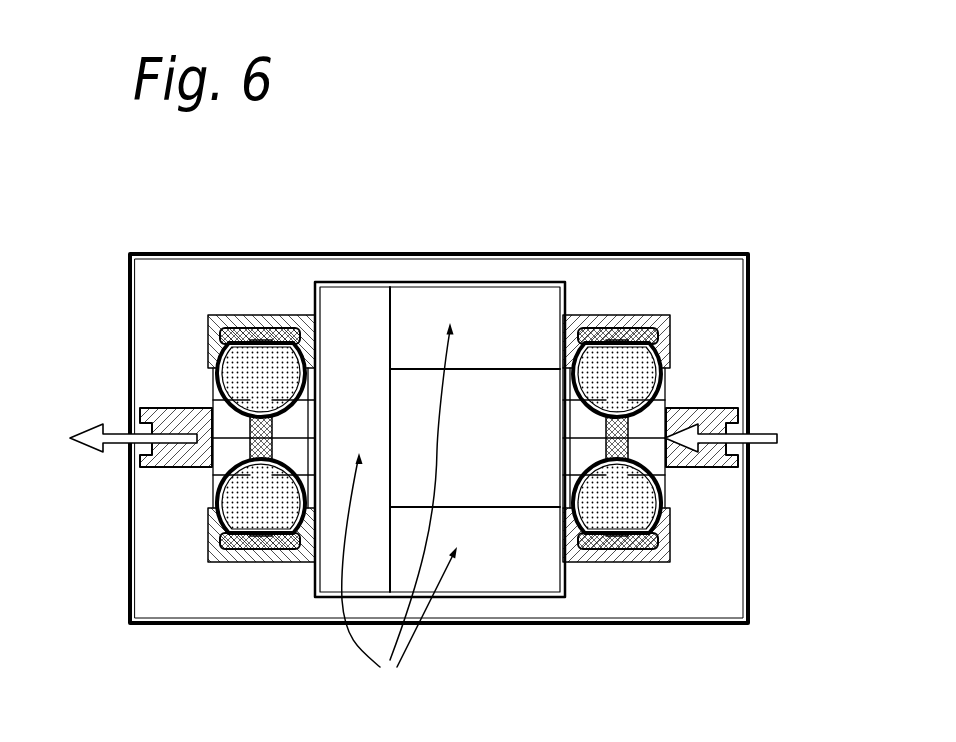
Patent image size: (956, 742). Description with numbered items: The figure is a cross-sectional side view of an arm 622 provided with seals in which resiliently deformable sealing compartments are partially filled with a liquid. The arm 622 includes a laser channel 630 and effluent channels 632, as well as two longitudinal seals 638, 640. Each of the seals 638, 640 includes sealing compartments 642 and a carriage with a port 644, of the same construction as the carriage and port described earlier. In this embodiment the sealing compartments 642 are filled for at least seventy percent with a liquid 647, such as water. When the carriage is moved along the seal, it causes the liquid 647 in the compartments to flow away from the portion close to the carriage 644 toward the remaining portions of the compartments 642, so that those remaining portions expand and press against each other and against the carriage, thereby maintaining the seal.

The arm 622 is at (628, 167).
The laser channel 630 is at (478, 462).
The effluent channels 632 is at (399, 510).
The longitudinal seal 638 is at (660, 411).
The longitudinal seal 640 is at (218, 412).
The sealing compartments 642 is at (255, 337).
The port 644 is at (168, 460).
The liquid 647 is at (278, 360).